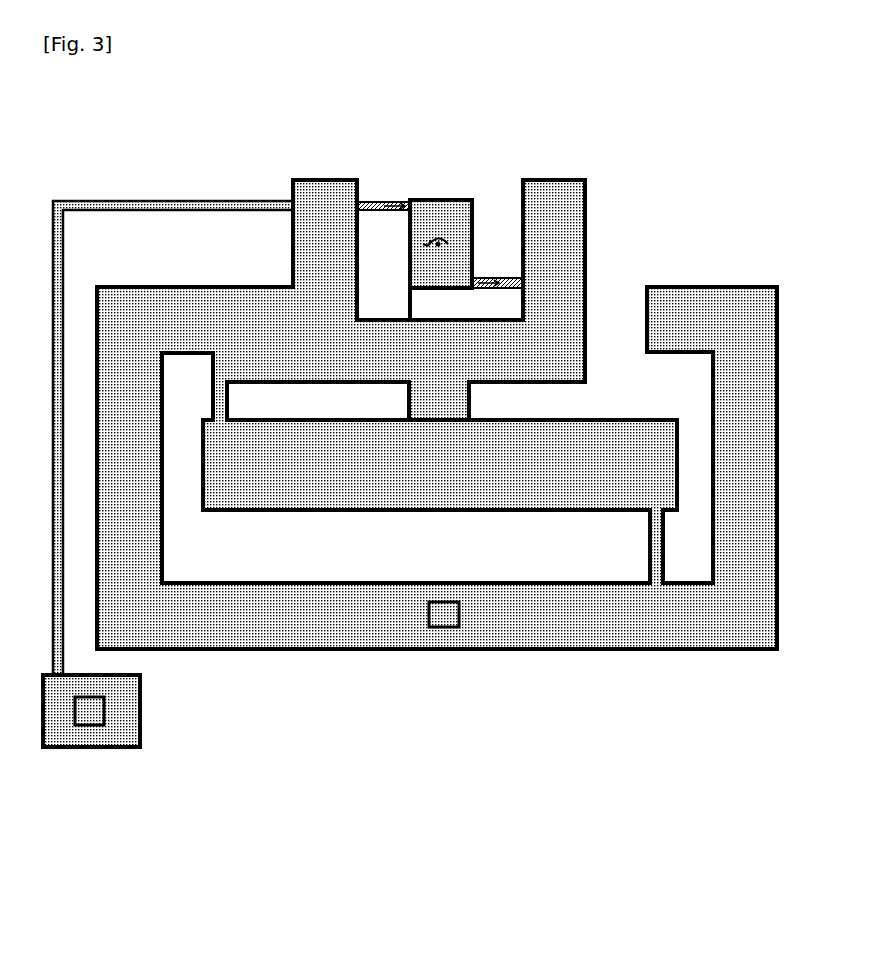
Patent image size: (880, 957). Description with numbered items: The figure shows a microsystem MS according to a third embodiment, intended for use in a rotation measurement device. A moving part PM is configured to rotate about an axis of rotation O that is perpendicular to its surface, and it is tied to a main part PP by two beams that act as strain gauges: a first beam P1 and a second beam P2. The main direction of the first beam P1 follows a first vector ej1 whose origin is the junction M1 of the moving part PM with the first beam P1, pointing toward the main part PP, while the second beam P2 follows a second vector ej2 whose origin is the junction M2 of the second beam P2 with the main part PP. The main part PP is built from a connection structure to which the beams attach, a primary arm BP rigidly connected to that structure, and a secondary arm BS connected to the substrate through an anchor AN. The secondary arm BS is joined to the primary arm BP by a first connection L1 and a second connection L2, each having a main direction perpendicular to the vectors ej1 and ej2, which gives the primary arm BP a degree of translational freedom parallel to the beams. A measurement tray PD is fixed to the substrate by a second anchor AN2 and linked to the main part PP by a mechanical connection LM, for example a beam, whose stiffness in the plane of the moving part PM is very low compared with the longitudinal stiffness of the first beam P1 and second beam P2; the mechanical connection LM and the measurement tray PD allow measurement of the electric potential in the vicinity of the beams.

The microsystem MS is at (568, 134).
The secondary arm BS is at (337, 632).
The main part PP is at (312, 208).
The primary arm BP is at (290, 487).
The first connection L1 is at (218, 388).
The second connection L2 is at (653, 528).
The moving part PM is at (457, 212).
The junction of the moving part with the first beam M1 is at (390, 190).
The junction of the main part with the second beam M2 is at (484, 299).
The first vector ej1 is at (391, 224).
The second vector ej2 is at (496, 301).
The axis of rotation O is at (435, 230).
The first beam P1 is at (380, 208).
The second beam P2 is at (518, 278).
The mechanical connection LM is at (180, 201).
The measurement tray PD is at (128, 717).
The anchor AN is at (445, 618).
The second anchor AN2 is at (93, 720).